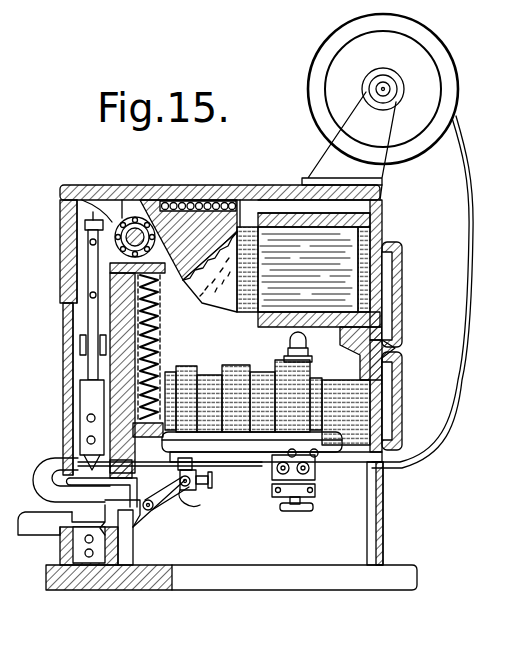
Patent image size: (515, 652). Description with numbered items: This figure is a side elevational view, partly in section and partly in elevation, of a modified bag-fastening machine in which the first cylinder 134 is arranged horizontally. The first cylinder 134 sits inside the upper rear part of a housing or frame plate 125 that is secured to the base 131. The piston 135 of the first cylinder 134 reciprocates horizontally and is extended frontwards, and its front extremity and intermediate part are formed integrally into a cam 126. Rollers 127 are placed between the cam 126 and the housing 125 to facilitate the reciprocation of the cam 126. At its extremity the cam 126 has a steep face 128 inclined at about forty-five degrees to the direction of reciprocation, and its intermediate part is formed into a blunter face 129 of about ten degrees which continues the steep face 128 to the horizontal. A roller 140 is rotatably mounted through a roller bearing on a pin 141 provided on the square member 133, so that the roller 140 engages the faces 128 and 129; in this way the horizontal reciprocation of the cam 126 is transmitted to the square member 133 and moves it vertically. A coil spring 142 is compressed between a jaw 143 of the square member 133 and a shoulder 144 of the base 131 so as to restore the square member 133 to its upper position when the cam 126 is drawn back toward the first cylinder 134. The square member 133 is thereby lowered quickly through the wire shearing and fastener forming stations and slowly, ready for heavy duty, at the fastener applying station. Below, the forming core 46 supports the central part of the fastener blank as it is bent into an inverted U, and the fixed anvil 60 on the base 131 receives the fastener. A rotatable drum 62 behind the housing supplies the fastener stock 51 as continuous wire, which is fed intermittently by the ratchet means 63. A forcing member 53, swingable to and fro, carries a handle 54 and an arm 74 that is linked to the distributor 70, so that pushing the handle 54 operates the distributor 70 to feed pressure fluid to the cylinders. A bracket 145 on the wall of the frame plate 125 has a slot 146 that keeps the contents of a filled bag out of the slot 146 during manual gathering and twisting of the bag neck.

The rotatable drum 62 is at (452, 103).
The fastener stock 51 is at (470, 260).
The piston 135 is at (290, 235).
The first cylinder 134 is at (372, 272).
The distributor 70 is at (380, 405).
The pin 141 is at (81, 192).
The roller 140 is at (122, 198).
The rollers 127 is at (172, 200).
The cam 126 is at (240, 198).
The housing 125 is at (60, 231).
The square member 133 is at (82, 275).
The jaw 143 is at (110, 283).
The face 128 is at (171, 272).
The blunter face 129 is at (200, 306).
The coil spring 142 is at (157, 328).
The shoulder 144 is at (168, 418).
The forming core 46 is at (78, 470).
The slot 146 is at (42, 499).
The bracket 145 is at (45, 535).
The fixed anvil 60 is at (78, 550).
The base 131 is at (70, 590).
The ratchet means 63 is at (196, 476).
The handle 54 is at (152, 502).
The arm 74 is at (202, 492).
The forcing member 53 is at (140, 510).